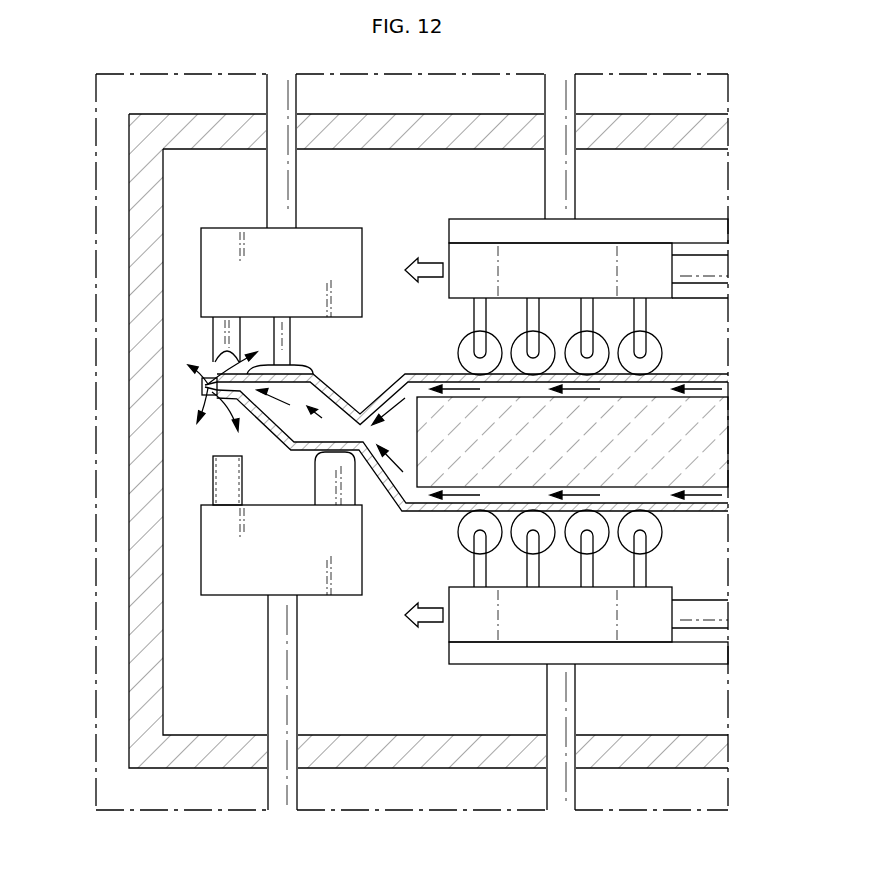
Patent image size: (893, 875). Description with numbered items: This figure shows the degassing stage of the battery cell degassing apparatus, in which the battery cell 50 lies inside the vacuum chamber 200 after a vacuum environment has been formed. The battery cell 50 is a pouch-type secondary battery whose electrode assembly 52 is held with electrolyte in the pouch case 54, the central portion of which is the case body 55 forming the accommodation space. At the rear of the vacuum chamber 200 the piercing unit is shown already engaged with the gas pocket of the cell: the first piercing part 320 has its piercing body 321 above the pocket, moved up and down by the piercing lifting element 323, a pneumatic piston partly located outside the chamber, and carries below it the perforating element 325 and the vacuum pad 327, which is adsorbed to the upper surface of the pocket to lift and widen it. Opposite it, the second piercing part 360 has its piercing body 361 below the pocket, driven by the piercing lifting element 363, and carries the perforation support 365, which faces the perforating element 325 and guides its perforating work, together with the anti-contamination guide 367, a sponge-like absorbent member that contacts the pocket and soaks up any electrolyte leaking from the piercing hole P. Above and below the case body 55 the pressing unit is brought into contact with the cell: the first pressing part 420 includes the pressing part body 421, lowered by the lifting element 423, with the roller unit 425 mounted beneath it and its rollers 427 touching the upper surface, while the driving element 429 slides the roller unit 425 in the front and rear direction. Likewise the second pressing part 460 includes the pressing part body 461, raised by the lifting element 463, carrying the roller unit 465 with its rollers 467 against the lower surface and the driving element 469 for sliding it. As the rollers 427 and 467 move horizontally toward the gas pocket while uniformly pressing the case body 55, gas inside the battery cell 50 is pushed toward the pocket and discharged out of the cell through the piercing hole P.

The vacuum chamber 200 is at (129, 126).
The first piercing part 320 is at (227, 224).
The piercing body 321 is at (210, 263).
The piercing lifting element 323 is at (276, 192).
The perforating element 325 is at (222, 340).
The vacuum pad 327 is at (290, 347).
The piercing hole P is at (212, 398).
The battery cell 50 is at (498, 407).
The electrode assembly 52 is at (710, 432).
The pouch case 54 is at (728, 507).
The case body 55 is at (728, 378).
The second piercing part 360 is at (227, 631).
The piercing body 361 is at (210, 545).
The piercing lifting element 363 is at (275, 679).
The perforation support 365 is at (222, 480).
The anti-contamination guide 367 is at (320, 486).
The first pressing part 420 is at (599, 224).
The pressing part body 421 is at (708, 230).
The lifting element 423 is at (583, 181).
The roller unit 425 is at (655, 288).
The roller 427 is at (663, 355).
The driving element 429 is at (710, 267).
The second pressing part 460 is at (599, 660).
The pressing part body 461 is at (708, 651).
The lifting element 463 is at (583, 705).
The roller unit 465 is at (655, 596).
The roller 467 is at (663, 532).
The driving element 469 is at (710, 613).